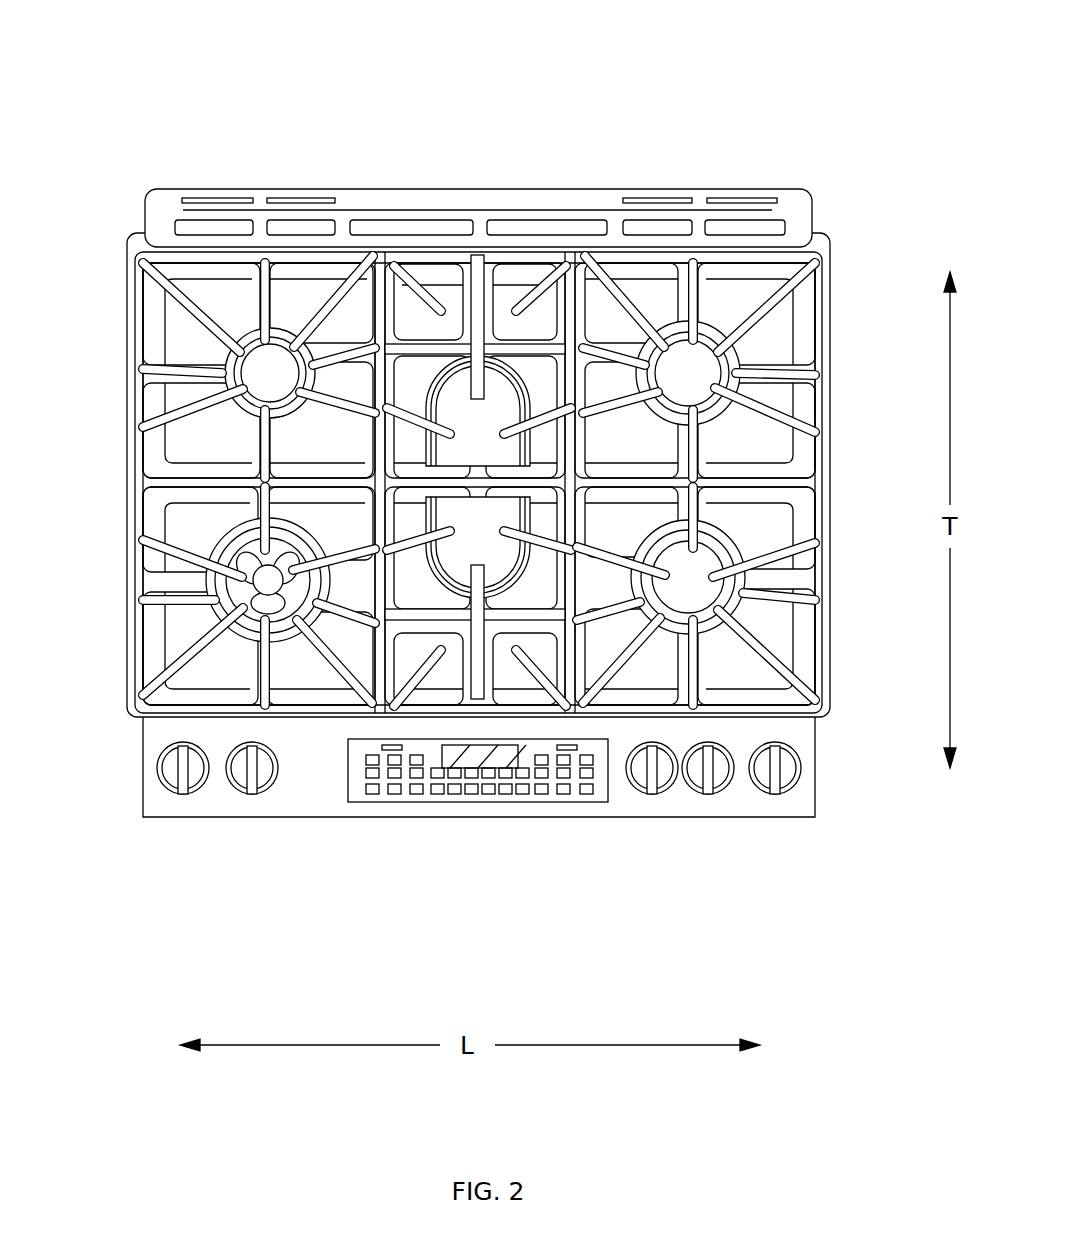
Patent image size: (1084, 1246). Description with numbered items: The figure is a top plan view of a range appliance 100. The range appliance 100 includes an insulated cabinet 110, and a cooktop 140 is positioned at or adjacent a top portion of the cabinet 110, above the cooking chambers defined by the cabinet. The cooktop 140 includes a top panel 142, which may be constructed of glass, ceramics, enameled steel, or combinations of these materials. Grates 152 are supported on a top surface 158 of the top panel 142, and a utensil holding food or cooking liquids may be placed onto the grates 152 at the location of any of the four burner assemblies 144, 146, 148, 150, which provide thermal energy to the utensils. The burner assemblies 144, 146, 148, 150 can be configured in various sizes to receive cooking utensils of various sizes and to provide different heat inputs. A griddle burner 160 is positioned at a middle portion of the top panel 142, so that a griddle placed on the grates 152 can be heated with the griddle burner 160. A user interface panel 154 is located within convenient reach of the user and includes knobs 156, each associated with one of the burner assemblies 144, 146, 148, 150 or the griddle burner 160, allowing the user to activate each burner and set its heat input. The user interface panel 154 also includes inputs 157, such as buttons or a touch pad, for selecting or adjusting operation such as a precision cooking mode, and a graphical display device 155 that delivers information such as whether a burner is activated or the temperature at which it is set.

The range appliance 100 is at (165, 126).
The insulated cabinet 110 is at (540, 200).
The cooktop 140 is at (830, 236).
The top panel 142 is at (803, 633).
The burner assembly 144 is at (248, 377).
The burner assembly 146 is at (248, 548).
The burner assembly 148 is at (700, 365).
The burner assembly 150 is at (707, 565).
The grates 152 is at (152, 597).
The user interface panel 154 is at (415, 790).
The graphical display device 155 is at (452, 778).
The knobs 156 is at (240, 795).
The inputs 157 is at (393, 797).
The top surface 158 is at (172, 639).
The griddle burner 160 is at (492, 410).